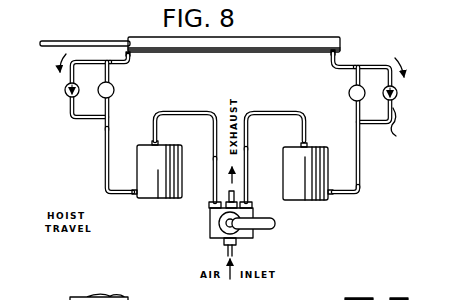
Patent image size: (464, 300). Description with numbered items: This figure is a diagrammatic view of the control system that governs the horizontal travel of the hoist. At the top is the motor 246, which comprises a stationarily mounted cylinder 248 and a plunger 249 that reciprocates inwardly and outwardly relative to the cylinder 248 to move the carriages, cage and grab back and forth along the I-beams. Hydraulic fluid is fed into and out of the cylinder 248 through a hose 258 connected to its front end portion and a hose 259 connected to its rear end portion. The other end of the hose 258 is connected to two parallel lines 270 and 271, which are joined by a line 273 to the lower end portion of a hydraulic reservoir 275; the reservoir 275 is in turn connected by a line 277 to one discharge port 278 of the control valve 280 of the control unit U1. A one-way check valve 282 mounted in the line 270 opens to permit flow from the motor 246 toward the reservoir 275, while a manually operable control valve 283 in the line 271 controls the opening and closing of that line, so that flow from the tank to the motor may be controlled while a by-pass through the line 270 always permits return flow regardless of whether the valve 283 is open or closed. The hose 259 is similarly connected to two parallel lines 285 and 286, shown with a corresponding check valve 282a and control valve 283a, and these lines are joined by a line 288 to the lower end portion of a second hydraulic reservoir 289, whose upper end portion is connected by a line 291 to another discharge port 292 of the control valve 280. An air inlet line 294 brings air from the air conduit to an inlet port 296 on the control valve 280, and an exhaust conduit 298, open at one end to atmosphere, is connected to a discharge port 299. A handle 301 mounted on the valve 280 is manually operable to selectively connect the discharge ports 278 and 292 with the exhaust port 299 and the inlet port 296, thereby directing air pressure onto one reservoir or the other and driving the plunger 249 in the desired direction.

The motor 246 is at (234, 32).
The cylinder 248 is at (247, 33).
The plunger 249 is at (85, 29).
The hose 258 is at (144, 63).
The hose 259 is at (357, 51).
The line 270 is at (74, 96).
The line 271 is at (126, 96).
The line 273 is at (99, 160).
The hydraulic reservoir 275 is at (152, 182).
The line 277 is at (185, 121).
The discharge port 278 is at (202, 192).
The control valve 280 is at (203, 224).
The one-way check valve 282 is at (53, 91).
The check valve 282a is at (411, 93).
The control valve 283 is at (129, 90).
The valve 283a is at (331, 88).
The line 285 is at (407, 125).
The line 286 is at (361, 90).
The line 288 is at (342, 133).
The hydraulic reservoir 289 is at (352, 205).
The line 291 is at (275, 122).
The discharge port 292 is at (259, 194).
The air inlet line 294 is at (263, 252).
The inlet port 296 is at (207, 248).
The exhaust conduit 298 is at (200, 179).
The discharge port 299 is at (260, 175).
The handle 301 is at (270, 219).
The control unit U1 is at (298, 232).